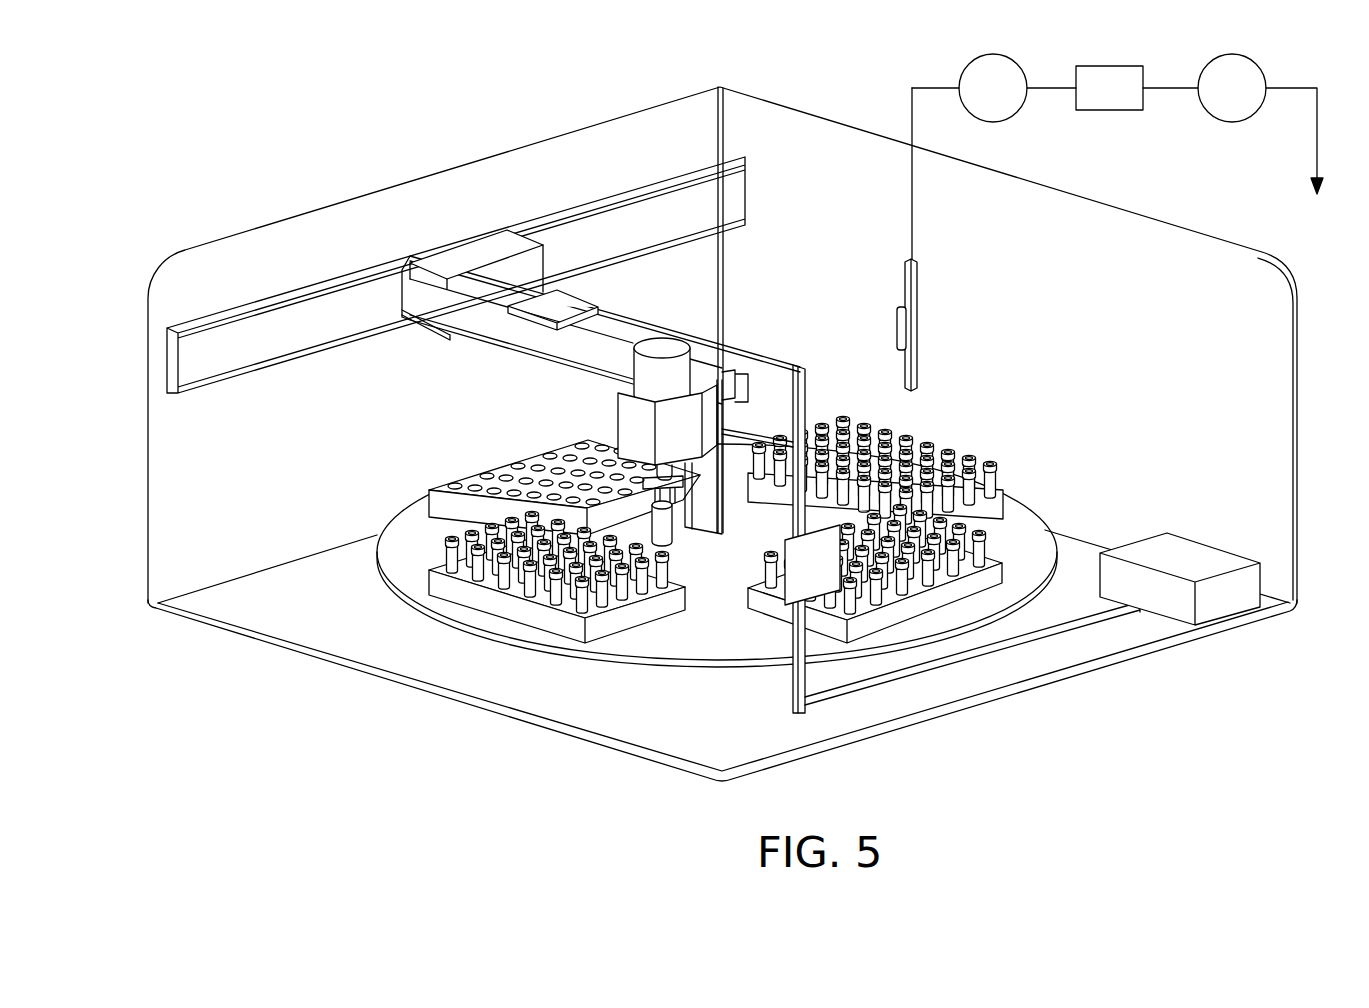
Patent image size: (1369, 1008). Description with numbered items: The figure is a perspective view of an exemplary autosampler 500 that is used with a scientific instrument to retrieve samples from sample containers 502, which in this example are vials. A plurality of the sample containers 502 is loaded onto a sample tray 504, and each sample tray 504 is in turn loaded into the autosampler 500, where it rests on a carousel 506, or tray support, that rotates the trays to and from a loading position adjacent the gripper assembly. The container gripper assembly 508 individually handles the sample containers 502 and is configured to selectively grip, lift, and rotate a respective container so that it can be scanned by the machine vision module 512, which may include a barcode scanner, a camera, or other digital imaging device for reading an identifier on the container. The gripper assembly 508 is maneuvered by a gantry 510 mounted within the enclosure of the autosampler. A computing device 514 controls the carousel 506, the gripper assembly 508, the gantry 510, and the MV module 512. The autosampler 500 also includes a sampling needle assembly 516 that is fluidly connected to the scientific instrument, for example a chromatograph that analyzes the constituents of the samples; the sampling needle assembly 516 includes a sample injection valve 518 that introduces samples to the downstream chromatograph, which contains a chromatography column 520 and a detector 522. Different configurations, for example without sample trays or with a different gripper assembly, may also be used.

The autosampler 500 is at (1118, 193).
The sample container 502 is at (663, 530).
The sample tray 504 is at (623, 622).
The carousel 506 is at (716, 668).
The container gripper assembly 508 is at (606, 416).
The gantry 510 is at (504, 226).
The machine vision (MV) module 512 is at (817, 592).
The computing device 514 is at (1208, 560).
The sampling needle assembly 516 is at (918, 323).
The sample injection valve 518 is at (969, 88).
The chromatography column 520 is at (1112, 88).
The detector 522 is at (1260, 124).